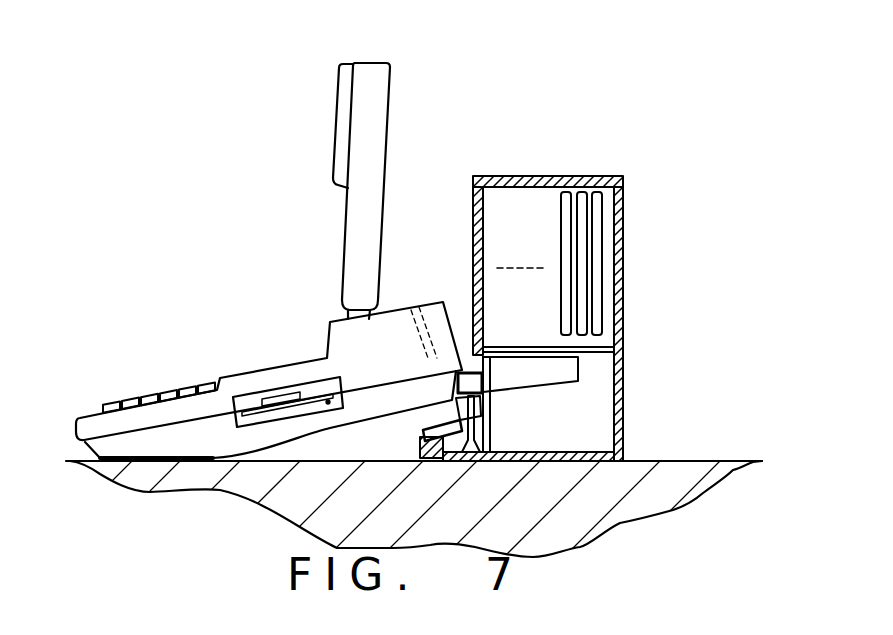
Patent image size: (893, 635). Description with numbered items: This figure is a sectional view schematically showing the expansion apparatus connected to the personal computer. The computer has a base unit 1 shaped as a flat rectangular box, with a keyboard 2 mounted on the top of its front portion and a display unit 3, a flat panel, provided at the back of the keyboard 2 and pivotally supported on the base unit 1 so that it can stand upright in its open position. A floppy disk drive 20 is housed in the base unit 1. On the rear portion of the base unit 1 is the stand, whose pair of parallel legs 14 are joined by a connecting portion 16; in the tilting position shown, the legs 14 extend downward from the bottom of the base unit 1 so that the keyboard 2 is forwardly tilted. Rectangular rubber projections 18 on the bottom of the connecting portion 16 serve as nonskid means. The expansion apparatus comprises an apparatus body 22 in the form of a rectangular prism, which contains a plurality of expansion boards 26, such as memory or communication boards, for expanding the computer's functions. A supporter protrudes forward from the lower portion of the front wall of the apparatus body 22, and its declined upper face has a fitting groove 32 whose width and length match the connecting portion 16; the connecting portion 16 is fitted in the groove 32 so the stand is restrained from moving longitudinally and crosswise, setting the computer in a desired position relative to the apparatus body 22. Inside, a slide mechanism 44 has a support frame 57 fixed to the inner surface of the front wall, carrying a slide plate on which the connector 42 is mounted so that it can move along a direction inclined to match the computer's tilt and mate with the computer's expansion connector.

The base unit 1 is at (392, 304).
The keyboard 2 is at (153, 390).
The display unit 3 is at (345, 246).
The legs 14 is at (478, 417).
The connecting portion 16 is at (421, 433).
The rubber projections 18 is at (478, 444).
The floppy disk drive 20 is at (253, 393).
The apparatus body 22 is at (553, 176).
The expansion boards 26 is at (565, 237).
The fitting groove 32 is at (482, 418).
The connector 42 is at (466, 350).
The slide mechanism 44 is at (578, 381).
The support frame 57 is at (578, 370).